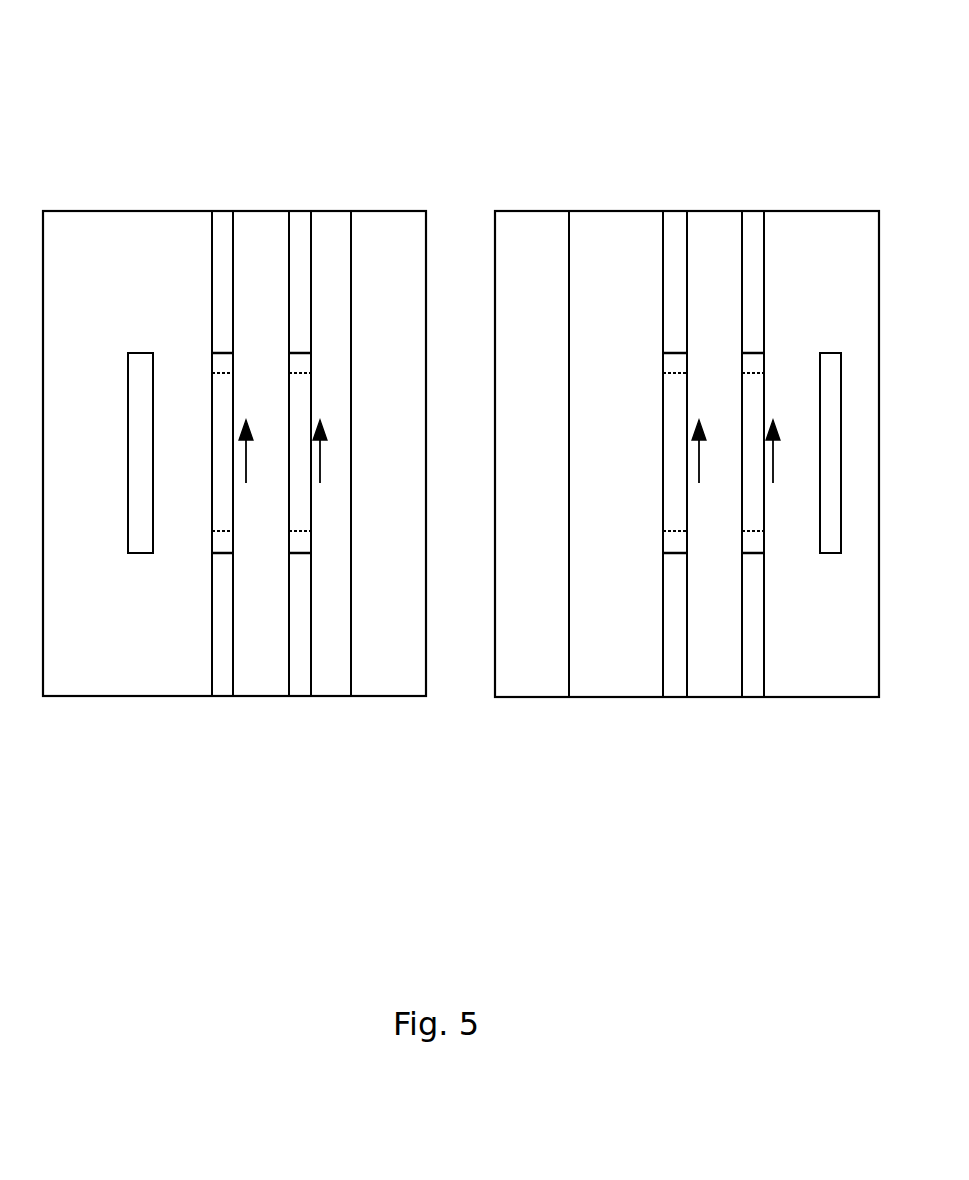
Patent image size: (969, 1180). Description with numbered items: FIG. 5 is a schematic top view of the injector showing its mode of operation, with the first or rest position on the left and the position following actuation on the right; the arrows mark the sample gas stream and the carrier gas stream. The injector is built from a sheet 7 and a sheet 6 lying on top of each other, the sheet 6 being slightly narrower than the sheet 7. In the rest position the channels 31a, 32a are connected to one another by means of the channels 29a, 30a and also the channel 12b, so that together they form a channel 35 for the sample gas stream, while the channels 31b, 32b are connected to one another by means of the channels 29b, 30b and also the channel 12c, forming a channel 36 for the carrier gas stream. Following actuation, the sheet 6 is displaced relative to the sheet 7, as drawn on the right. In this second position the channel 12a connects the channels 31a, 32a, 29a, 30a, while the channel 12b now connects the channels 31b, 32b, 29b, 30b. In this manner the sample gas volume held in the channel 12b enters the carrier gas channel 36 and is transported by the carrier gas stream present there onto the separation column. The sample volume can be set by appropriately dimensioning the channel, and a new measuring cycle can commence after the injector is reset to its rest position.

The sheet 6 is at (132, 303).
The sheet 7 is at (384, 303).
The channel 12a is at (136, 472).
The channel 12b is at (218, 460).
The channel 12c is at (298, 460).
The channel 29a is at (217, 570).
The channel 29b is at (302, 572).
The channel 30a is at (218, 337).
The channel 30b is at (297, 337).
The channel 31a is at (215, 673).
The channel 31b is at (297, 673).
The channel 32a is at (224, 222).
The channel 32b is at (299, 222).
The channel for the sample gas stream 35 is at (201, 225).
The channel for the carrier gas stream 36 is at (279, 225).